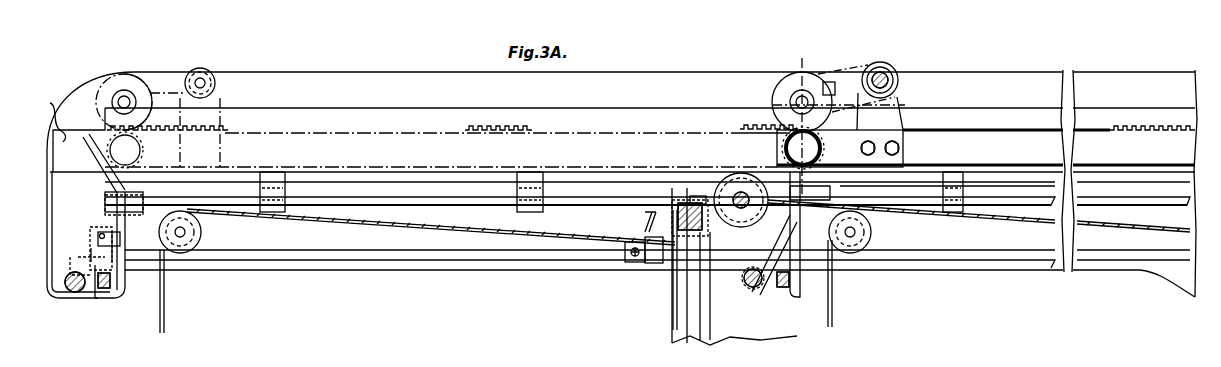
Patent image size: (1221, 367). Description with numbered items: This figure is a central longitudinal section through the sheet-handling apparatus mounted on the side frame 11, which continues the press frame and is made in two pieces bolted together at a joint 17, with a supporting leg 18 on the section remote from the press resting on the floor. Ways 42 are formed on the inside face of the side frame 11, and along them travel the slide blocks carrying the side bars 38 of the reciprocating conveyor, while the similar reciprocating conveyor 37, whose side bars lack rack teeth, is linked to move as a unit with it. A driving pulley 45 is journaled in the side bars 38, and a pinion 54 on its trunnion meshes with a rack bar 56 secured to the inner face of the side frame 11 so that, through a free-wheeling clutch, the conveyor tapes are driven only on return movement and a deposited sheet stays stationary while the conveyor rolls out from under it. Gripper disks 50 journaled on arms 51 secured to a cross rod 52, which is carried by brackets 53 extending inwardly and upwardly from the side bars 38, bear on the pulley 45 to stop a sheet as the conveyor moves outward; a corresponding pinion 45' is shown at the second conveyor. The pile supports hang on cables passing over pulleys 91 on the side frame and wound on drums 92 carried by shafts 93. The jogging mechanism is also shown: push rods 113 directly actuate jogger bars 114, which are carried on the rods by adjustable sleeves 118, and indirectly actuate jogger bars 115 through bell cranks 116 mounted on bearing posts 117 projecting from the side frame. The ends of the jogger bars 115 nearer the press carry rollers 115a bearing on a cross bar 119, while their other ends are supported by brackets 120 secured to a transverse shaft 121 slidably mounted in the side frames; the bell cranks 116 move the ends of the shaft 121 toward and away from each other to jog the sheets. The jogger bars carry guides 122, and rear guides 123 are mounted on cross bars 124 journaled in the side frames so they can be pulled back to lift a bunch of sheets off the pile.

The side frame 11 is at (368, 72).
The ways 42 is at (80, 190).
The rack bar 56 is at (478, 118).
The reciprocating conveyor 37 is at (1000, 172).
The jogger bars 115 is at (393, 182).
The push rods 113 is at (392, 262).
The shafts 93 is at (745, 212).
The gripper disks 50 is at (108, 78).
The driving pulley 45 is at (138, 150).
The rear guides 123 is at (124, 225).
The bearing posts 117 is at (118, 241).
The brackets 120 is at (108, 222).
The bell cranks 116 is at (70, 257).
The transverse shaft 121 is at (68, 290).
The cross bars 124 is at (103, 300).
The pulleys 91 is at (202, 235).
The guides 122 is at (278, 175).
The sleeves 118 is at (628, 262).
The jogger bars 114 is at (655, 265).
The supporting legs 18 is at (740, 338).
The drums 92 is at (739, 212).
The cross bar 119 is at (696, 200).
The rollers 115a is at (696, 196).
The side bars 38 is at (755, 128).
The pinion 54 is at (822, 150).
The pinion 45' is at (777, 148).
The brackets 53 is at (890, 112).
The cross rod 52 is at (890, 72).
The arms 51 is at (845, 76).
The joint 17 is at (826, 82).